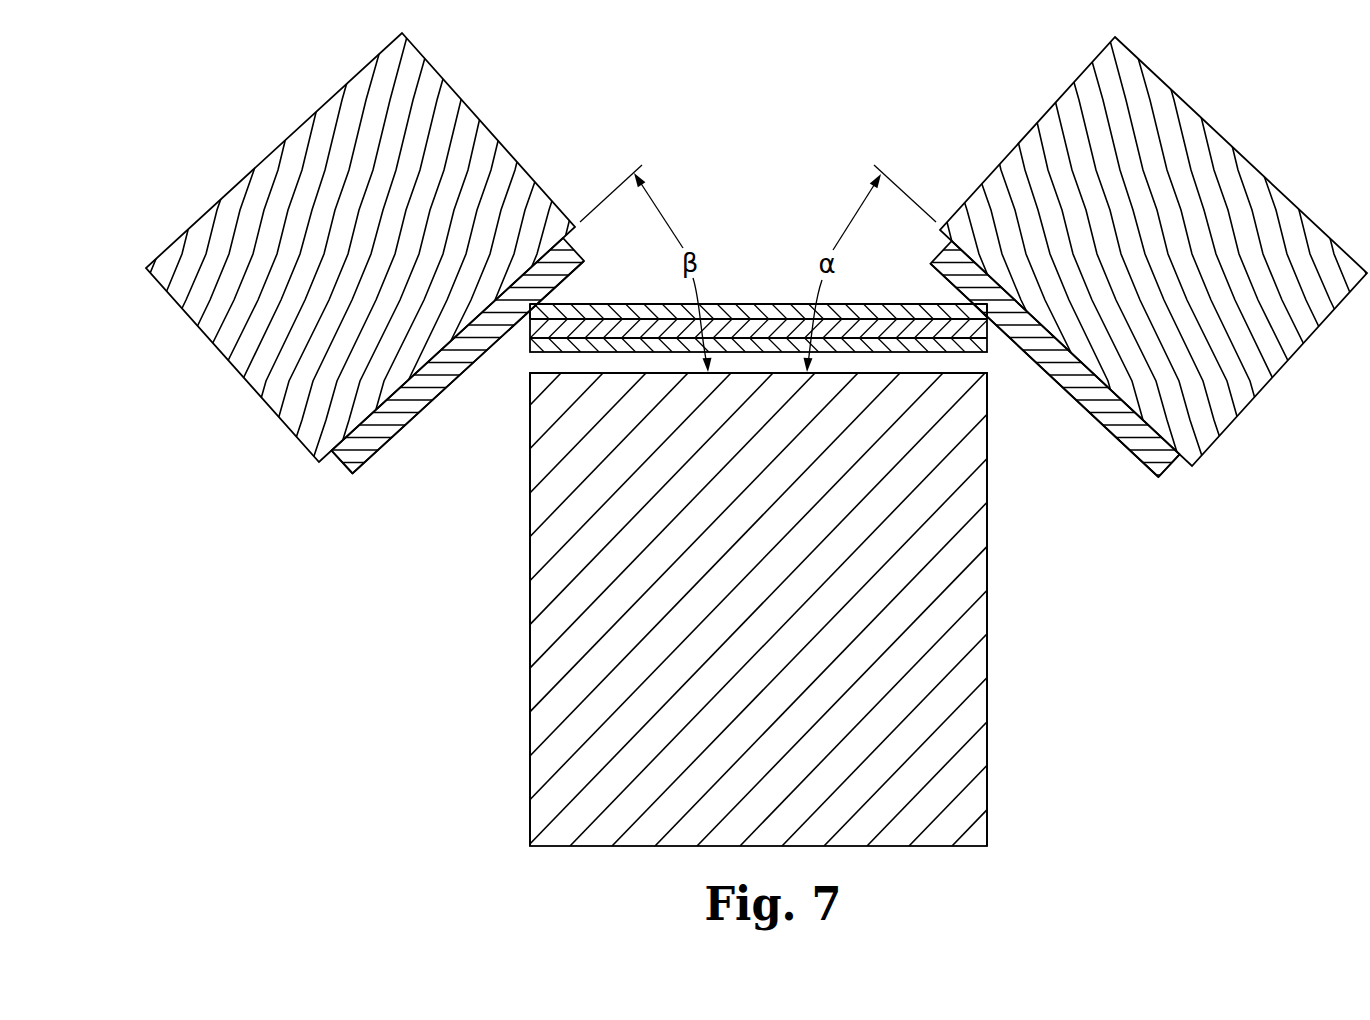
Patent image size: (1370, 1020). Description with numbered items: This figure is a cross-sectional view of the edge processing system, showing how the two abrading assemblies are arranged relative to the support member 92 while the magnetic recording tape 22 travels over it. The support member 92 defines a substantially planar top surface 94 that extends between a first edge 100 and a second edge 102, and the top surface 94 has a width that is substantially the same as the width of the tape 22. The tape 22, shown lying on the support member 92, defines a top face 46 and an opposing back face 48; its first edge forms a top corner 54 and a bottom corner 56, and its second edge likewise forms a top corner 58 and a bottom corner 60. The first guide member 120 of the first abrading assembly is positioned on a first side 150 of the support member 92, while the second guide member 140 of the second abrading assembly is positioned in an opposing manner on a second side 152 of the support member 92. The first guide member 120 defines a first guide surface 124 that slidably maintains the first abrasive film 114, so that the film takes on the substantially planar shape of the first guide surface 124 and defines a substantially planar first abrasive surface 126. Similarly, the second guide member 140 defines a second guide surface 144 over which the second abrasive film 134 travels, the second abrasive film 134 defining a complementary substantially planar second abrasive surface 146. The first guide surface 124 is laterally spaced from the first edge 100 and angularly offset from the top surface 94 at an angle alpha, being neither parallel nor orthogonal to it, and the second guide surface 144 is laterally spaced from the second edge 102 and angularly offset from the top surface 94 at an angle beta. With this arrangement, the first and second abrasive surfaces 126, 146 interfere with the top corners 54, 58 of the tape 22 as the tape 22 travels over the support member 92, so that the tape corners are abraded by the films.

The magnetic recording tape 22 is at (786, 300).
The top face 46 is at (735, 300).
The back face 48 is at (868, 356).
The top corner 54 is at (555, 313).
The bottom corner 56 is at (536, 356).
The top corner 58 is at (965, 313).
The bottom corner 60 is at (977, 356).
The support member 92 is at (1050, 651).
The top surface 94 is at (652, 365).
The first edge 100 is at (987, 373).
The second edge 102 is at (530, 373).
The first abrasive film 114 is at (1080, 387).
The first guide member 120 is at (1219, 128).
The first guide surface 124 is at (1151, 440).
The first abrasive surface 126 is at (1100, 435).
The second abrasive film 134 is at (423, 393).
The second guide member 140 is at (266, 150).
The second guide surface 144 is at (357, 447).
The second abrasive surface 146 is at (401, 442).
The first side 150 is at (1196, 626).
The second side 152 is at (238, 529).